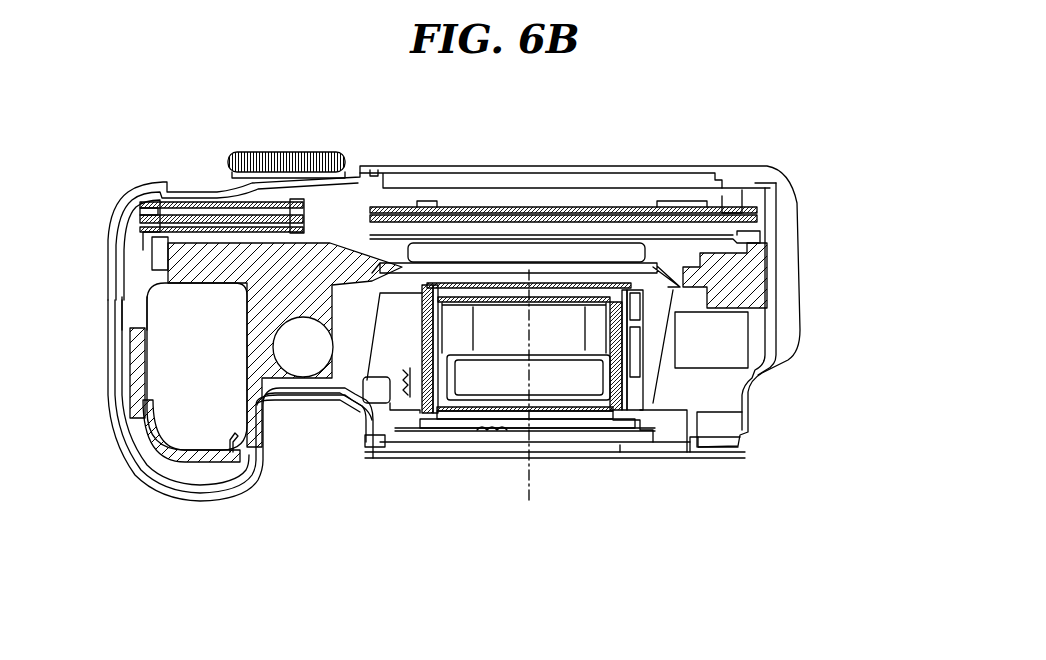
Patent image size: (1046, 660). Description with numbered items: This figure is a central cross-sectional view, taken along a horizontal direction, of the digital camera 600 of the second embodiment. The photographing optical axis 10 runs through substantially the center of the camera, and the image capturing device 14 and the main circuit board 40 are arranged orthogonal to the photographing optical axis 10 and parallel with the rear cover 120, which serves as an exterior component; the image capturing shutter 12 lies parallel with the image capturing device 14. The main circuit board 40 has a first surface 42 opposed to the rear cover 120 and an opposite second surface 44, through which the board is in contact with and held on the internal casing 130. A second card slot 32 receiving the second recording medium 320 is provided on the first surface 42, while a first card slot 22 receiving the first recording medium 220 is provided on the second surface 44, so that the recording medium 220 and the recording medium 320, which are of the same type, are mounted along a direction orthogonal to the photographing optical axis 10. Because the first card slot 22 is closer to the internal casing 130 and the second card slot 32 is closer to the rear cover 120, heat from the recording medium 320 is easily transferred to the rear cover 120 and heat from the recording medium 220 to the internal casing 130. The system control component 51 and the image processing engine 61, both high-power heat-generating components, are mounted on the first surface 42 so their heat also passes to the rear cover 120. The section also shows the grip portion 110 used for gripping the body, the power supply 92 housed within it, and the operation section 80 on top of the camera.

The digital camera 600 is at (848, 163).
The photographing optical axis 10 is at (532, 482).
The image capturing shutter 12 is at (655, 283).
The image capturing device 14 is at (676, 272).
The first card slot 22 is at (215, 262).
The second card slot 32 is at (228, 198).
The main circuit board 40 is at (762, 224).
The first surface 42 is at (716, 214).
The second surface 44 is at (630, 252).
The system control component 51 is at (533, 208).
The image processing engine 61 is at (414, 208).
The operation section 80 is at (302, 157).
The power supply 92 is at (200, 408).
The grip portion 110 is at (203, 503).
The rear cover 120 is at (373, 177).
The internal casing 130 is at (265, 352).
The first recording medium 220 is at (142, 228).
The second recording medium 320 is at (140, 207).